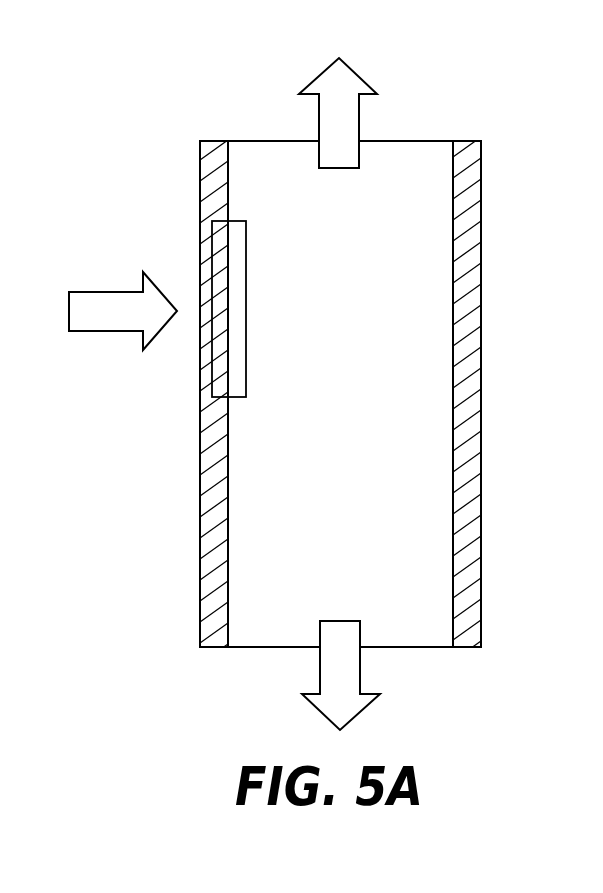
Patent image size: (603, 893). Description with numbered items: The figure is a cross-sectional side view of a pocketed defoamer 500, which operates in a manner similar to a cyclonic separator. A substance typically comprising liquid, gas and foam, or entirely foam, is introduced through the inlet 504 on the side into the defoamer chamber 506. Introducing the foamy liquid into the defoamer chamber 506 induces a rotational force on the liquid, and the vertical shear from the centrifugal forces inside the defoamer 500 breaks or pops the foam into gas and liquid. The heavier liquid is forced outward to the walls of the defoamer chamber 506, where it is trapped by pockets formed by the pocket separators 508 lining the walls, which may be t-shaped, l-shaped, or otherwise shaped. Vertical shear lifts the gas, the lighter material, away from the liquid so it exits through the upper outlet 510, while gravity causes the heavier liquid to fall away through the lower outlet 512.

The pocketed defoamer 500 is at (113, 156).
The inlet 504 is at (238, 365).
The defoamer chamber 506 is at (428, 350).
The pocket separator 508 is at (460, 473).
The upper outlet 510 is at (257, 141).
The lower outlet 512 is at (262, 647).